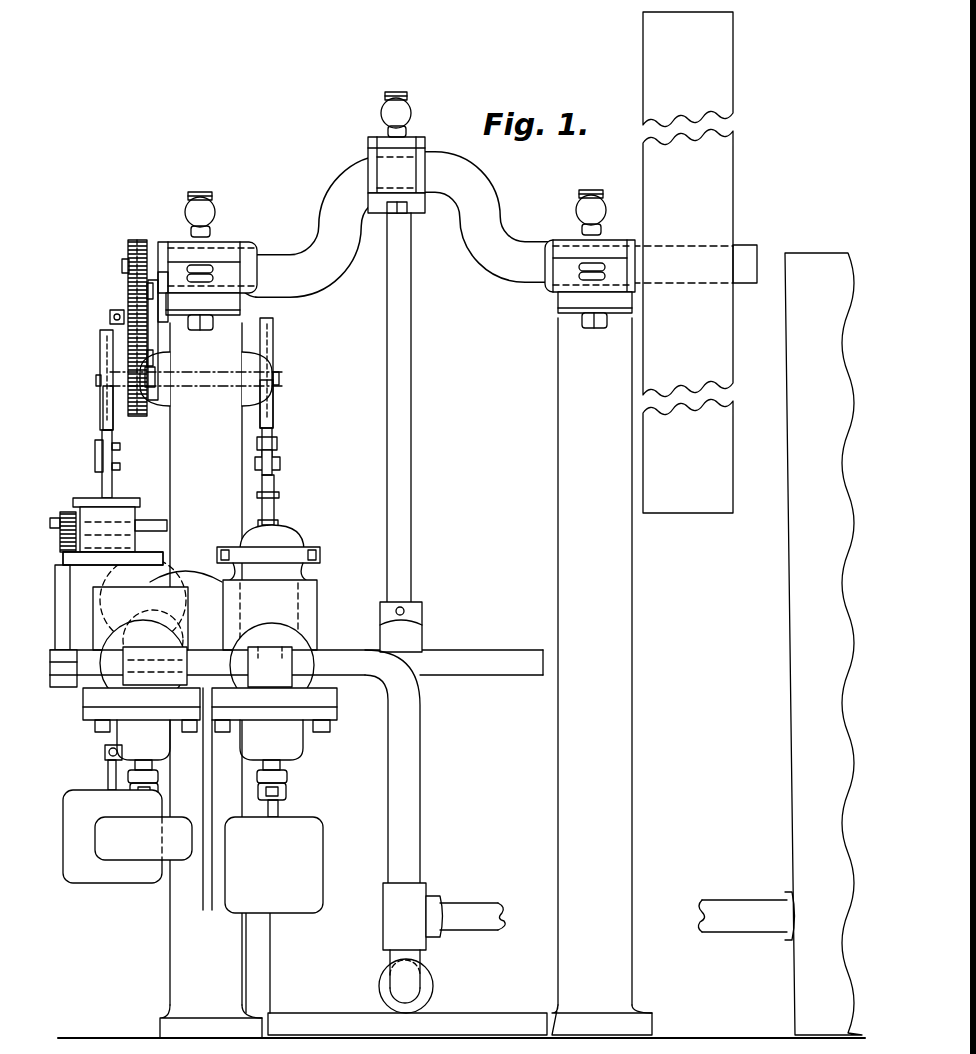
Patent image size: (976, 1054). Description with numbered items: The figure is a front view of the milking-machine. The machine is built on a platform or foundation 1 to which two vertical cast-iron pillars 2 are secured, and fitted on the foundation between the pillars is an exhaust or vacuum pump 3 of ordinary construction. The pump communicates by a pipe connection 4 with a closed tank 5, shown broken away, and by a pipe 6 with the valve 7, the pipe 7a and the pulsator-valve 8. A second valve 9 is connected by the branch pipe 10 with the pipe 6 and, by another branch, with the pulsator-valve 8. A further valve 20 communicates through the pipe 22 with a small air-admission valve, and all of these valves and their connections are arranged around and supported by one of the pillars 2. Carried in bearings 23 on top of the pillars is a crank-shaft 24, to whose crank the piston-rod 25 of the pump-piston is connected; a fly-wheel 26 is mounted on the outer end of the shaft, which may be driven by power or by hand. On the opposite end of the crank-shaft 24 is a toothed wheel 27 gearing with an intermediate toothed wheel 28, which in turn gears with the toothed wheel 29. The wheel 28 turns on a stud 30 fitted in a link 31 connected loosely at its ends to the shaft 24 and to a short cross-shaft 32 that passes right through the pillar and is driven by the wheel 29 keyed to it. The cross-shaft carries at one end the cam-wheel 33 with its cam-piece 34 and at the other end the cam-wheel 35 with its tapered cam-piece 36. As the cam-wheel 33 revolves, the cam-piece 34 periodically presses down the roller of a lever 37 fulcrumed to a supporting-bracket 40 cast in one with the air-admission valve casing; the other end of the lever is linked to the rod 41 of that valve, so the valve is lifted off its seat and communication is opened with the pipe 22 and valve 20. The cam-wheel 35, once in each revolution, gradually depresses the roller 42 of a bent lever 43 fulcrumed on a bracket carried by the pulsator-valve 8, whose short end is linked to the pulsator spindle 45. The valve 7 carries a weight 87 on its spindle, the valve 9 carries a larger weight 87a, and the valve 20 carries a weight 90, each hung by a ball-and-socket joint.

The platform or foundation 1 is at (461, 1021).
The vertical cast-iron pillar 2 is at (371, 661).
The exhaust or vacuum pump 3 is at (296, 727).
The pipe connection 4 is at (468, 904).
The closed tank 5 is at (823, 644).
The pipe 6 is at (399, 807).
The valve 7 is at (140, 631).
The pipe 7a is at (198, 575).
The pulsator-valve 8 is at (258, 540).
The valve 9 is at (270, 643).
The branch pipe 10 is at (207, 667).
The valve 20 is at (93, 560).
The pipe 22 is at (100, 572).
The bearing 23 is at (228, 250).
The crank-shaft 24 is at (507, 227).
The piston-rod 25 is at (411, 498).
The fly-wheel 26 is at (688, 262).
The toothed wheel 27 is at (141, 240).
The intermediate toothed wheel 28 is at (128, 289).
The toothed wheel 29 is at (138, 417).
The stud 30 is at (110, 317).
The link 31 is at (152, 330).
The short cross-shaft 32 is at (96, 381).
The cam-wheel 33 is at (100, 340).
The cam-piece 34 is at (103, 410).
The cam-wheel 35 is at (274, 410).
The cam-piece 36 is at (274, 325).
The lever 37 is at (95, 455).
The supporting-bracket 40 is at (102, 486).
The rod 41 is at (112, 483).
The roller 42 is at (277, 443).
The bent lever 43 is at (280, 465).
The spindle 45 is at (275, 508).
The weight 87 is at (143, 838).
The weight 87a is at (274, 865).
The weight 90 is at (112, 836).